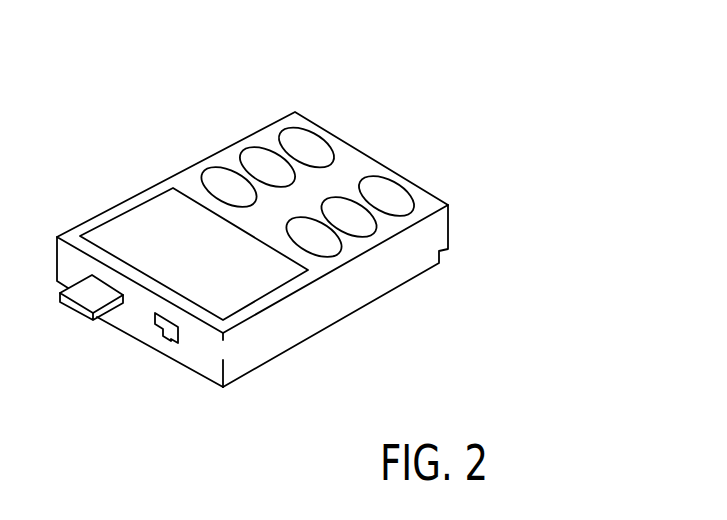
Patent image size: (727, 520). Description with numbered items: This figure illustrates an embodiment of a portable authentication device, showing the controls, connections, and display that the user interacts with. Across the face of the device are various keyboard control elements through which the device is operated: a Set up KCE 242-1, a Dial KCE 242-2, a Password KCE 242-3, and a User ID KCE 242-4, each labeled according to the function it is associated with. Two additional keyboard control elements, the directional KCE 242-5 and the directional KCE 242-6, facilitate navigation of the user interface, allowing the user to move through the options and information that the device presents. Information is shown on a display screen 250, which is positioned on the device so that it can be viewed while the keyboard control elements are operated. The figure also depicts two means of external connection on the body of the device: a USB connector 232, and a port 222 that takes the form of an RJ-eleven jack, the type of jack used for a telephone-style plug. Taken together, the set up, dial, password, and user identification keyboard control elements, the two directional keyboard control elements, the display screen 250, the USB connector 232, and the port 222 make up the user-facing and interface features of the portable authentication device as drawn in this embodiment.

The port 222 is at (175, 342).
The USB connector 232 is at (75, 311).
The Set up KCE 242-1 is at (305, 128).
The Dial KCE 242-2 is at (385, 180).
The Password KCE 242-3 is at (242, 149).
The User ID KCE 242-4 is at (378, 240).
The directional KCE 242-5 is at (203, 172).
The directional KCE 242-6 is at (342, 256).
The display screen 250 is at (105, 236).